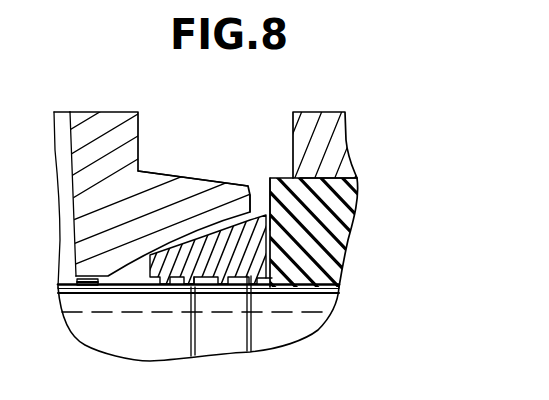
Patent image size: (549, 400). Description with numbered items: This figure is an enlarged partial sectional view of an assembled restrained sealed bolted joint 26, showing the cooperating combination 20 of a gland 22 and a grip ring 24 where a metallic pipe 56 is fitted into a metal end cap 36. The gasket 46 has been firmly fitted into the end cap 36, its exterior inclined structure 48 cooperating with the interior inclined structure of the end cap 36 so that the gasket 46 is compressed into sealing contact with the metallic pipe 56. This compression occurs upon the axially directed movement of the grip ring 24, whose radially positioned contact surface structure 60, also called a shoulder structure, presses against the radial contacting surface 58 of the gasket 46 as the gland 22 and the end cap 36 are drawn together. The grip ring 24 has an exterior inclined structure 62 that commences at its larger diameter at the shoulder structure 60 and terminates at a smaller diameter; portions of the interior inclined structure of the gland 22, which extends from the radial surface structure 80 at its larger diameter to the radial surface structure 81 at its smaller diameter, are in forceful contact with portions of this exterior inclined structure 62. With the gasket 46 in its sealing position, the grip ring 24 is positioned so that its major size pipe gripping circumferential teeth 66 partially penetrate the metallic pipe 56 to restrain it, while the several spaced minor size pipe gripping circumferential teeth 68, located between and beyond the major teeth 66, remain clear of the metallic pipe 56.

The cooperating combination 20 is at (138, 110).
The gland 22 is at (95, 110).
The grip ring 24 is at (165, 285).
The restrained sealed bolted joint 26 is at (55, 167).
The end cap 36 is at (328, 110).
The gasket 46 is at (344, 241).
The exterior inclined structure 48 is at (357, 185).
The metallic pipe 56 is at (100, 348).
The radial contacting surface 58 is at (267, 180).
The radial contacting surface structure 60 is at (272, 288).
The exterior inclined structure 62 is at (255, 214).
The major size pipe gripping circumferential teeth 66 is at (185, 285).
The minor size pipe gripping circumferential teeth 68 is at (258, 286).
The radial surface structure 80 is at (250, 183).
The radial surface structure 81 is at (77, 279).